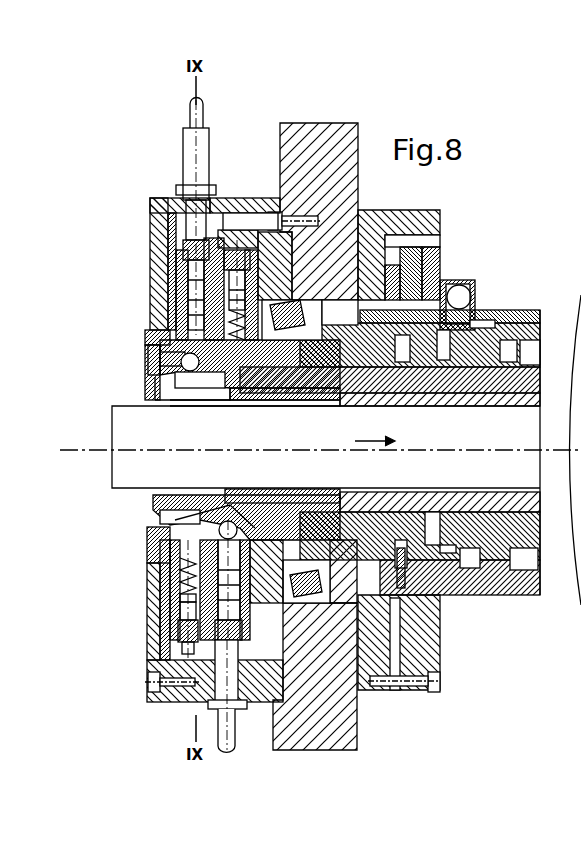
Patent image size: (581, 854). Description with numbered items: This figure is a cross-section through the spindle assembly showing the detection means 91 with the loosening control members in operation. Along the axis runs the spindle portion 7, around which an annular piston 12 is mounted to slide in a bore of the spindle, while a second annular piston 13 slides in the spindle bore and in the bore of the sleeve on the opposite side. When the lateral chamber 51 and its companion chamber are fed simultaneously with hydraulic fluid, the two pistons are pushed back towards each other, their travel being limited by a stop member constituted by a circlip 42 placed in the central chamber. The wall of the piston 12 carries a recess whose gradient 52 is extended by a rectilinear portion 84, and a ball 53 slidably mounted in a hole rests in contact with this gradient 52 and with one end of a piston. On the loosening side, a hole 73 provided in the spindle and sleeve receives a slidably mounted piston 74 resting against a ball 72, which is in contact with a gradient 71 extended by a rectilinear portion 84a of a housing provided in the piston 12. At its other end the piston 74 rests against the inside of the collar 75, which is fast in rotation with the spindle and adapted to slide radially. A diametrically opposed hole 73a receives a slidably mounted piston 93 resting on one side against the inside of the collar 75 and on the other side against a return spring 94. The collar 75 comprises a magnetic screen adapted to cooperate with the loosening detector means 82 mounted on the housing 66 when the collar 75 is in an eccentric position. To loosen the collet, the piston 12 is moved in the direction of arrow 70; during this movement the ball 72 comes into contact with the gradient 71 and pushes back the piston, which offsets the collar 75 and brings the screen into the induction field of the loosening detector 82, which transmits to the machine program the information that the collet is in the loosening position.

The shaft 7 is at (130, 433).
The annular piston 12 is at (462, 595).
The second annular piston 13 is at (543, 377).
The circlip 42 is at (490, 595).
The lateral chamber 51 is at (405, 560).
The gradient 52 is at (252, 520).
The ball 53 is at (150, 550).
The housing 66 is at (155, 205).
The arrow 70 is at (382, 437).
The gradient 71 is at (150, 395).
The ball 72 is at (150, 342).
The hole 73 is at (175, 315).
The hole 73a is at (174, 588).
The piston 74 is at (185, 262).
The collar 75 is at (160, 248).
The loosening detector means 82 is at (196, 168).
The rectilinear portion 84 is at (222, 505).
The rectilinear portion 84a is at (207, 380).
The detection means 91 is at (242, 197).
The piston 93 is at (174, 600).
The return spring 94 is at (176, 571).